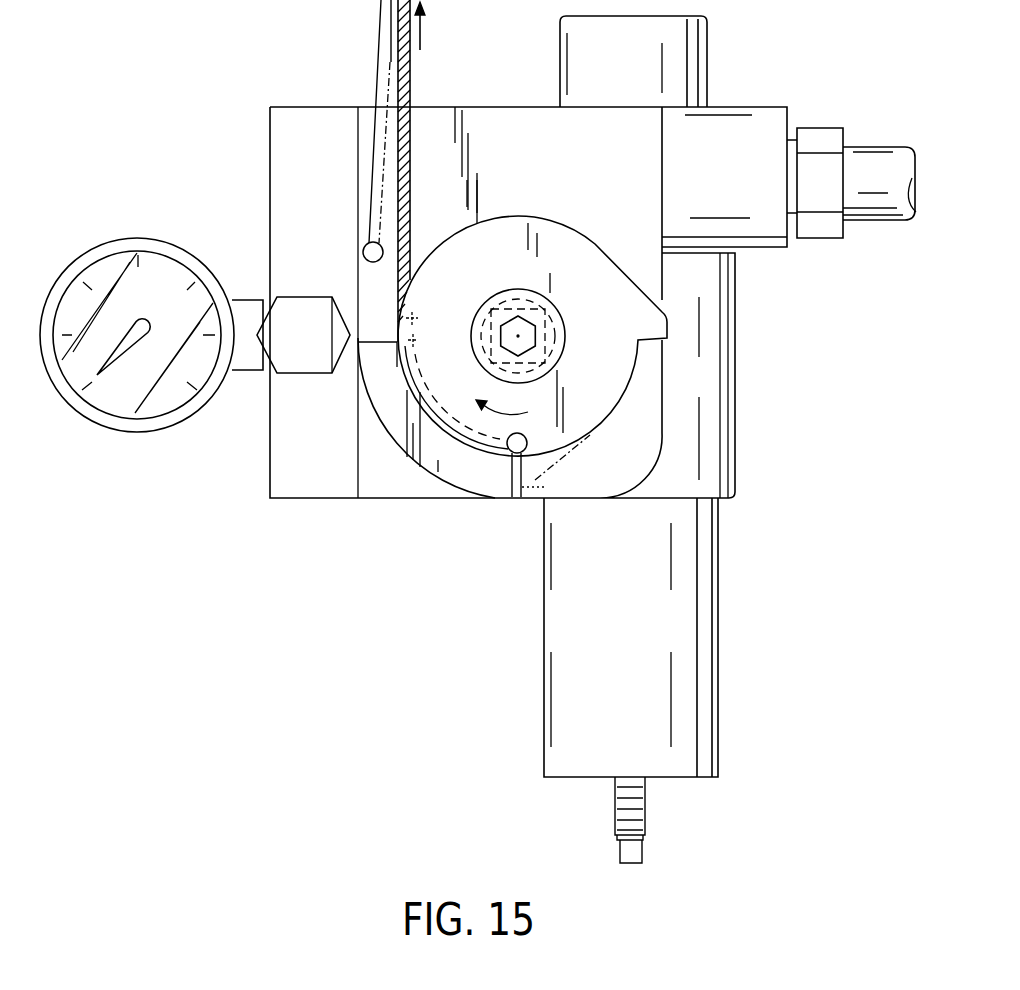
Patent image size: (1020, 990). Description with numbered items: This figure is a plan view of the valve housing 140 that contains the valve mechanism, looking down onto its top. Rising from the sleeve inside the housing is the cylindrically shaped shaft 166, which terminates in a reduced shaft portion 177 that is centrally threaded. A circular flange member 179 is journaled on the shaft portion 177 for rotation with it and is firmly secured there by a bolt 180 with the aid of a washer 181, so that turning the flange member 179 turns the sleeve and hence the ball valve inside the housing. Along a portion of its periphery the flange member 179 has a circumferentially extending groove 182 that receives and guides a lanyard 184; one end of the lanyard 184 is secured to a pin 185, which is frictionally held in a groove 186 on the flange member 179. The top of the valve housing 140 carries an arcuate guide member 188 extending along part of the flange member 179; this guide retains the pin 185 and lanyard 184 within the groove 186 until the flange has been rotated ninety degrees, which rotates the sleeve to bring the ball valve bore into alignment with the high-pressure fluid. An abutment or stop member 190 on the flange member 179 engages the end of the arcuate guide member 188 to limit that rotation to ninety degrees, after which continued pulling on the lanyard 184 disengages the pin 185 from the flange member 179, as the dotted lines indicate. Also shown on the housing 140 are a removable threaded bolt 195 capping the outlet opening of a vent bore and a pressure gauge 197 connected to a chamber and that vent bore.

The valve housing 140 is at (264, 484).
The shaft 166 is at (553, 337).
The shaft portion 177 is at (525, 290).
The circular flange member 179 is at (630, 390).
The bolt 180 is at (527, 328).
The washer 181 is at (500, 290).
The groove 182 is at (423, 410).
The lanyard 184 is at (382, 60).
The pin 185 is at (365, 245).
The groove 186 is at (513, 455).
The arcuate guide member 188 is at (440, 470).
The stop member 190 is at (658, 326).
The threaded bolt 195 is at (300, 305).
The pressure gauge 197 is at (113, 425).